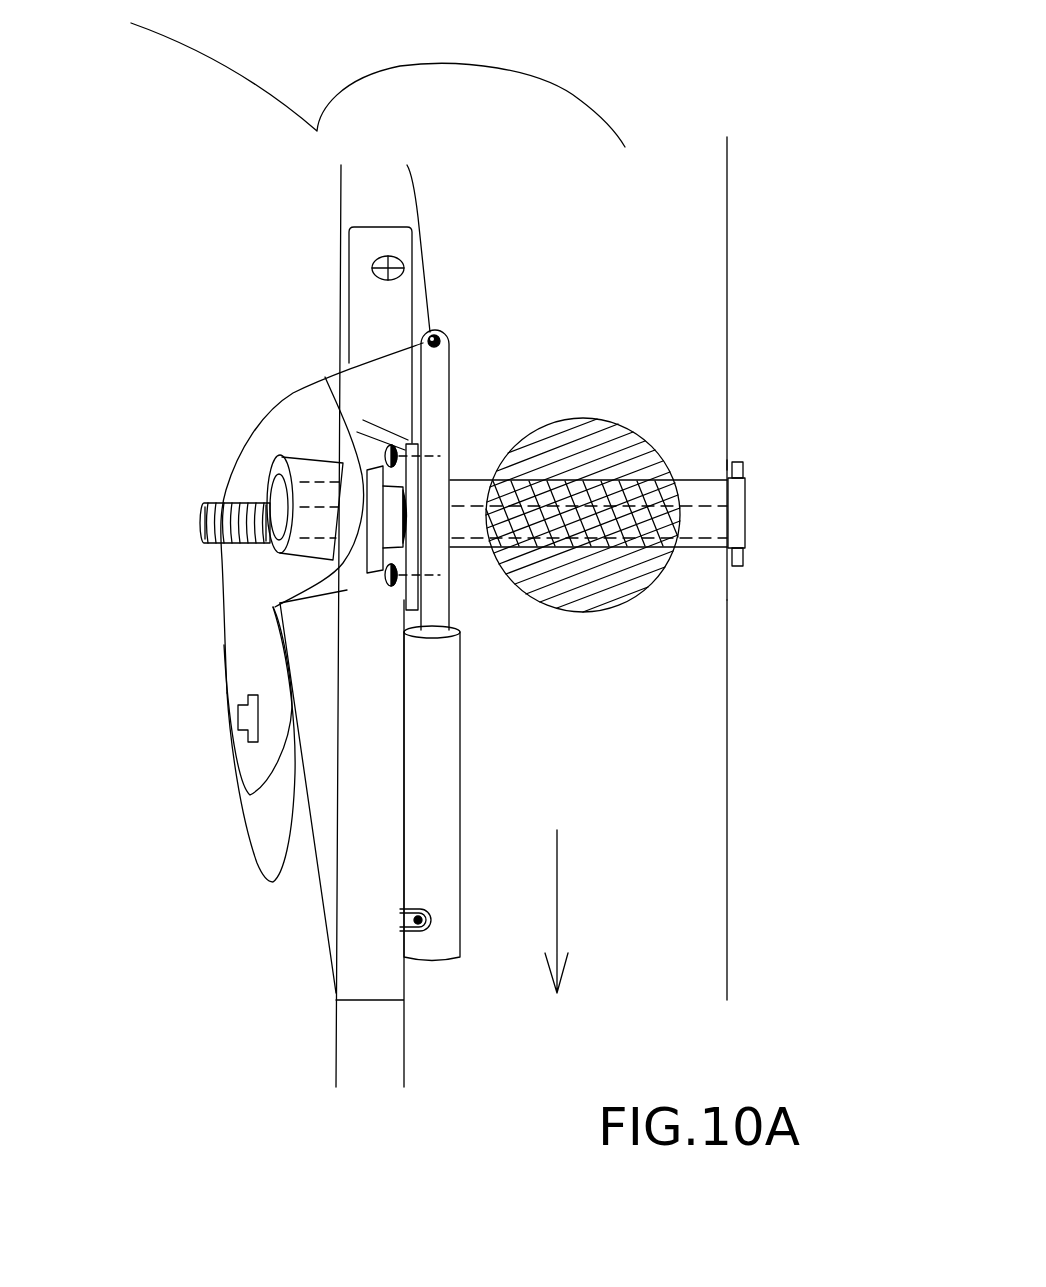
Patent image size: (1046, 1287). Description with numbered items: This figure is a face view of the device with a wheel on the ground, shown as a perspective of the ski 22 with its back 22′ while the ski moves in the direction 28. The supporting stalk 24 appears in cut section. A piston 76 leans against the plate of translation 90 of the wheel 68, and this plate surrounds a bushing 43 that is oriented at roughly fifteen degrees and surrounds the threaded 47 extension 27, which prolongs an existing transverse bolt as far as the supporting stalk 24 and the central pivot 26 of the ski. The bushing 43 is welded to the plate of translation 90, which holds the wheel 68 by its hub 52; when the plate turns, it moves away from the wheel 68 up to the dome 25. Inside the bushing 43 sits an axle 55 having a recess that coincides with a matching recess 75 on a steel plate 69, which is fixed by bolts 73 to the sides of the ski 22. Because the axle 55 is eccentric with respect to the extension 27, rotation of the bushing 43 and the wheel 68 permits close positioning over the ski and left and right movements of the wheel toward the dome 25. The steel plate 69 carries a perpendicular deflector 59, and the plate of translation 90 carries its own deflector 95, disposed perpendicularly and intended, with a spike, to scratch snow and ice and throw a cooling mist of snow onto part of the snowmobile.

The ski 22 is at (717, 468).
The back of the ski 22′ is at (623, 205).
The supporting stalk 24 is at (601, 432).
The dome 25 is at (478, 102).
The central pivot 26 is at (740, 522).
The extension 27 is at (200, 513).
The direction 28 is at (558, 932).
The bushing 43 is at (272, 467).
The threaded 47 is at (208, 503).
The hub 52 is at (238, 721).
The axle 55 is at (258, 503).
The perpendicular deflector 59 is at (317, 650).
The wheel 68 is at (263, 838).
The steel plate 69 is at (378, 846).
The bolts 73 is at (380, 650).
The recess 75 is at (407, 540).
The piston 76 is at (440, 415).
The plate of translation 90 is at (335, 388).
The deflector 95 is at (357, 483).